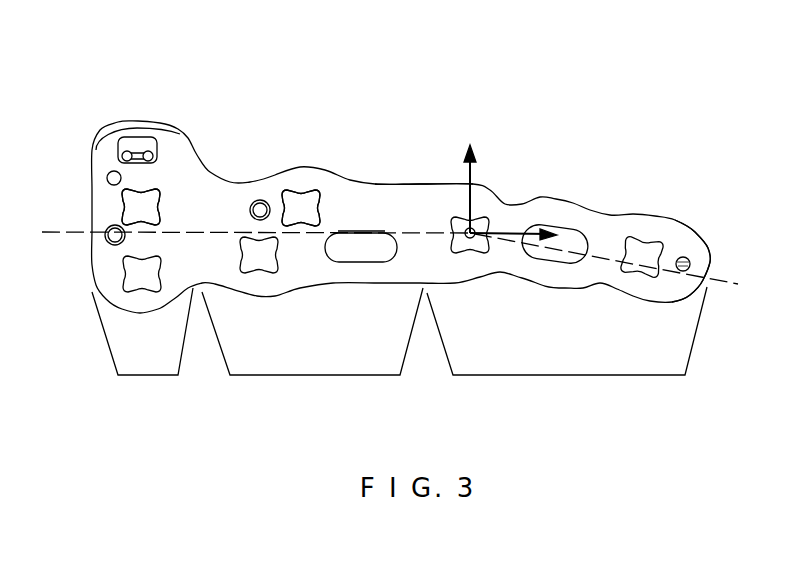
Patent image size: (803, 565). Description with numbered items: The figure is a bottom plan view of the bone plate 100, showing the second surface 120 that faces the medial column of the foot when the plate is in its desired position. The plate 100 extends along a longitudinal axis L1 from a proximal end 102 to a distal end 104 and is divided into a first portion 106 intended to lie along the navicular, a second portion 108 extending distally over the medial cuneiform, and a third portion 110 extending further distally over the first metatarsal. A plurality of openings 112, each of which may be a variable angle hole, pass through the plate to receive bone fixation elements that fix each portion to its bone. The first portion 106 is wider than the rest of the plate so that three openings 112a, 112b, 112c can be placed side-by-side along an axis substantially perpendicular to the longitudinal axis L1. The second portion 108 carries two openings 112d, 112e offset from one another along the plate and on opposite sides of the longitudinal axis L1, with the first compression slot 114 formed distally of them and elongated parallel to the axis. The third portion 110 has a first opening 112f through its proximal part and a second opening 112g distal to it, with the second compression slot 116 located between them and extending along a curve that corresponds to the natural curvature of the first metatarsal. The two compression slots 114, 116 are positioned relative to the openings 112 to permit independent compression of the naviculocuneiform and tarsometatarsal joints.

The bone plate 100 is at (295, 106).
The proximal end 102 is at (92, 190).
The distal end 104 is at (708, 243).
The first portion 106 is at (142, 343).
The second portion 108 is at (312, 343).
The third portion 110 is at (567, 342).
The openings 112 is at (148, 137).
The first opening of first portion 112a is at (133, 143).
The second opening of first portion 112b is at (148, 207).
The third opening of first portion 112c is at (142, 290).
The first opening of second portion 112d is at (313, 190).
The second opening of second portion 112e is at (265, 273).
The first opening of third portion 112f is at (485, 218).
The second opening of third portion 112g is at (637, 245).
The first compression slot 114 is at (361, 233).
The second compression slot 116 is at (570, 238).
The second surface 120 is at (405, 200).
The longitudinal axis L1 is at (383, 245).